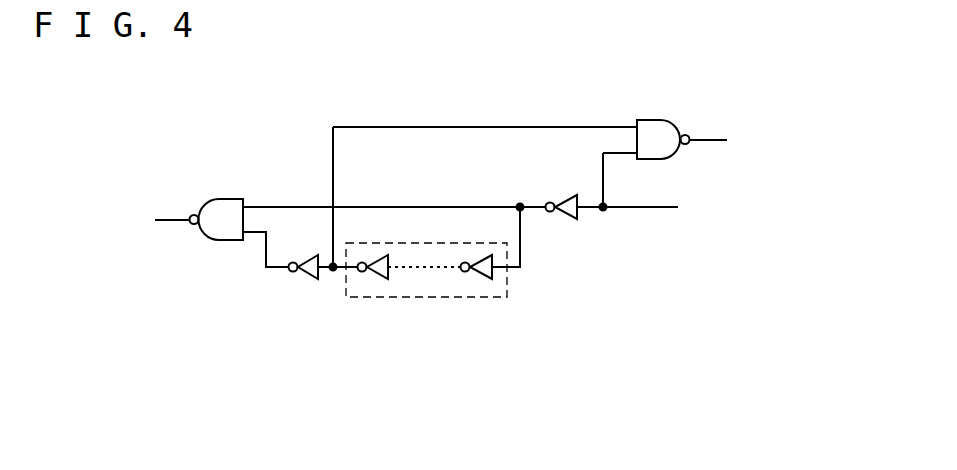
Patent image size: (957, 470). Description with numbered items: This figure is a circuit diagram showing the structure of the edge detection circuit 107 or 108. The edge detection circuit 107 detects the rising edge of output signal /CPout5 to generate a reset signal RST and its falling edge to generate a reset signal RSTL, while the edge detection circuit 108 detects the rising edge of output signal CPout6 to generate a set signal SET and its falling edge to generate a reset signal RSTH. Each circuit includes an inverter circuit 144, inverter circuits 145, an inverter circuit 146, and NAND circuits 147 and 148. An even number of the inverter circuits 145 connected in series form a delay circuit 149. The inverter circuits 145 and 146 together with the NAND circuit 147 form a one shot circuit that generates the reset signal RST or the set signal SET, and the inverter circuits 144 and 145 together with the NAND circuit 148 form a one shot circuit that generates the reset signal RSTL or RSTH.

The edge detection circuit 107 is at (455, 233).
The edge detection circuit 108 is at (455, 233).
The inverter circuit 144 is at (565, 222).
The inverter circuit 145 is at (377, 273).
The inverter circuit 146 is at (305, 283).
The NAND circuit 147 is at (225, 203).
The NAND circuit 148 is at (658, 122).
The delay circuit 149 is at (507, 287).